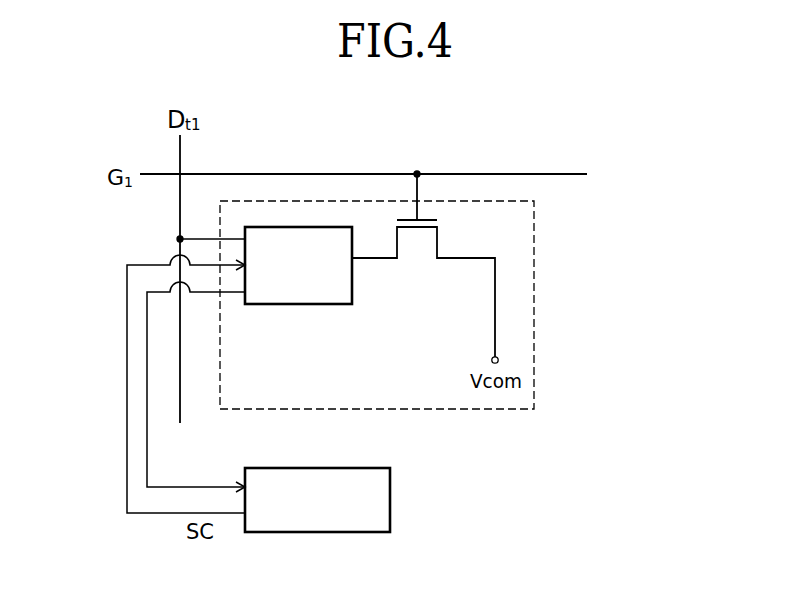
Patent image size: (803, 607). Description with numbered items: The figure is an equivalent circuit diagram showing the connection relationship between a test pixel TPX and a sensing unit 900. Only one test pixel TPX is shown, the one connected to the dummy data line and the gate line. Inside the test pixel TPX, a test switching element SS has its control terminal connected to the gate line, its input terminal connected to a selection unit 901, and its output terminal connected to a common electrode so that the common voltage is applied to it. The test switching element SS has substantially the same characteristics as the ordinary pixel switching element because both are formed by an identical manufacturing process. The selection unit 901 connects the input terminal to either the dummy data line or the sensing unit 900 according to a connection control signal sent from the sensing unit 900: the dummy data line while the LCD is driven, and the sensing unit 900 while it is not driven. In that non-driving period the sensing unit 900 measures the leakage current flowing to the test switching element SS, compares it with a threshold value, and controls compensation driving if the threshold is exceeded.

The sensing unit 900 is at (390, 500).
The selection unit 901 is at (323, 304).
The test pixel TPX is at (534, 248).
The test switching element SS is at (423, 264).